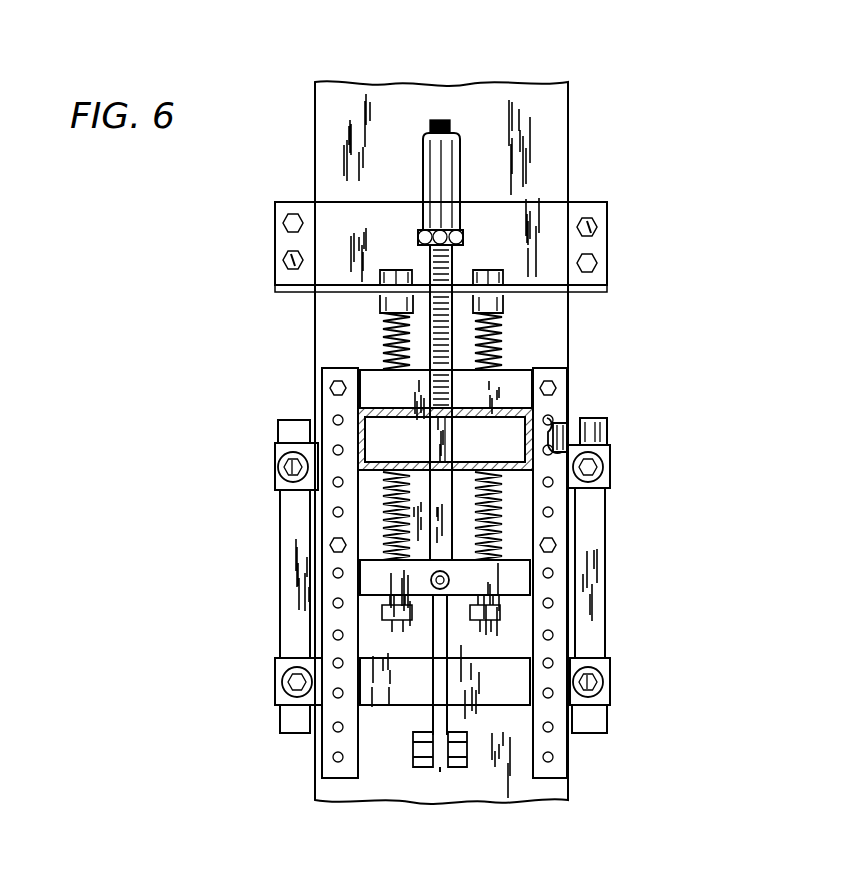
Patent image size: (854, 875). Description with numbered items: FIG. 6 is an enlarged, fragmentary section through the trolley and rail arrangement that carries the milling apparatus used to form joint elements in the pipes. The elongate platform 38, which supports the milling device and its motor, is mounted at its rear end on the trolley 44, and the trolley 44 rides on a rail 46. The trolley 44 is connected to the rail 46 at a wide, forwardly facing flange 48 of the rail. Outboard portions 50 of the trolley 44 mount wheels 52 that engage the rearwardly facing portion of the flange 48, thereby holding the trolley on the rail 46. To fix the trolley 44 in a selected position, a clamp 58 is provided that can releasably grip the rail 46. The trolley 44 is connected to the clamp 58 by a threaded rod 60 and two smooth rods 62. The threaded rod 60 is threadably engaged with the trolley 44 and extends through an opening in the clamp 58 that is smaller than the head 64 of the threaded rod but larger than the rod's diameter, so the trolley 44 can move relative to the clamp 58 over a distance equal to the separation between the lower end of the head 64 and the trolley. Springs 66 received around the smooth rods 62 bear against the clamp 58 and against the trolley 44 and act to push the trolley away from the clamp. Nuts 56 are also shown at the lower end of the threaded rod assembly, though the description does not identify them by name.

The platform 38 is at (380, 408).
The trolley 44 is at (650, 552).
The rail 46 is at (568, 100).
The flange 48 is at (485, 93).
The outboard portions 50 is at (598, 507).
The wheels 52 is at (565, 423).
The nuts 56 is at (457, 767).
The clamp 58 is at (616, 235).
The threaded rod 60 is at (462, 245).
The smooth rods 62 is at (505, 345).
The head 64 is at (422, 137).
The springs 66 is at (505, 318).